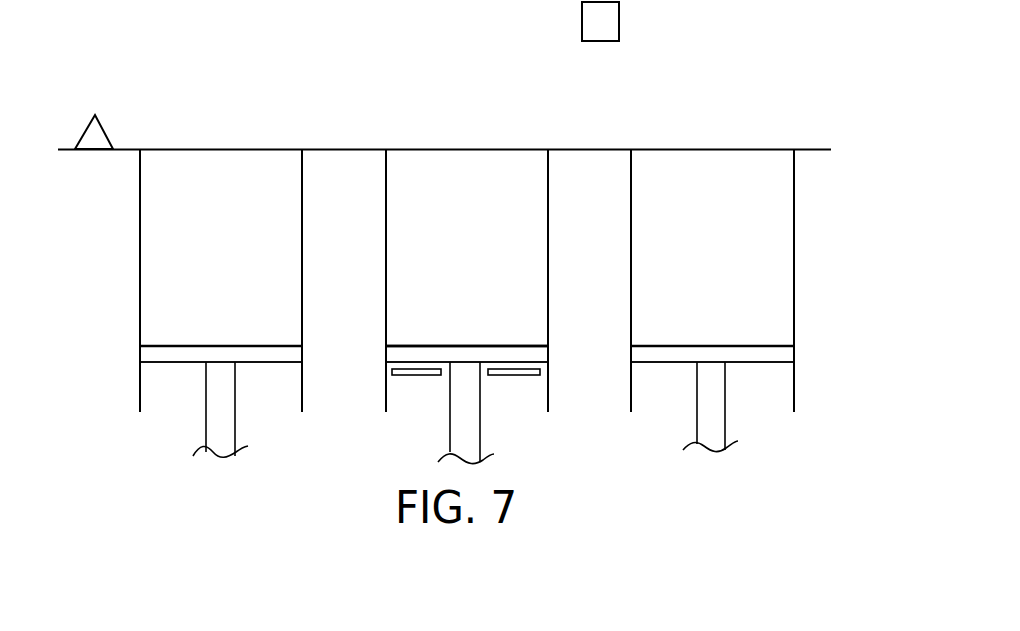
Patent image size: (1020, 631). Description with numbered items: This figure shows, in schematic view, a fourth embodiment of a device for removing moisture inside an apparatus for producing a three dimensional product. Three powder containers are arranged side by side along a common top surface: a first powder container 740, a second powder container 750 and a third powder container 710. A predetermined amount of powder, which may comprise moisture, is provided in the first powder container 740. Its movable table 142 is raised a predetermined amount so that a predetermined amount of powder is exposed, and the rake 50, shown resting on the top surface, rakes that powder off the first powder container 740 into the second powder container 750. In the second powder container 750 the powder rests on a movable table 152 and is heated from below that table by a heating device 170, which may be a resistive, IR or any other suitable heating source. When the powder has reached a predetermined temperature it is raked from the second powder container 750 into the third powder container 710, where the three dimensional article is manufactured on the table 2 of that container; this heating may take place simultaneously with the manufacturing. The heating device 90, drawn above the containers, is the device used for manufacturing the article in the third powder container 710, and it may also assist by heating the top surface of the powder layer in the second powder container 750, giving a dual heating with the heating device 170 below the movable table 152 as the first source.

The heating device 90 is at (605, 18).
The rake 50 is at (97, 138).
The first powder container 740 is at (140, 238).
The second powder container 750 is at (386, 238).
The third powder container 710 is at (631, 238).
The movable table 152 is at (507, 355).
The movable table 142 is at (166, 354).
The heating device 170 is at (417, 373).
The plate 2 is at (775, 352).